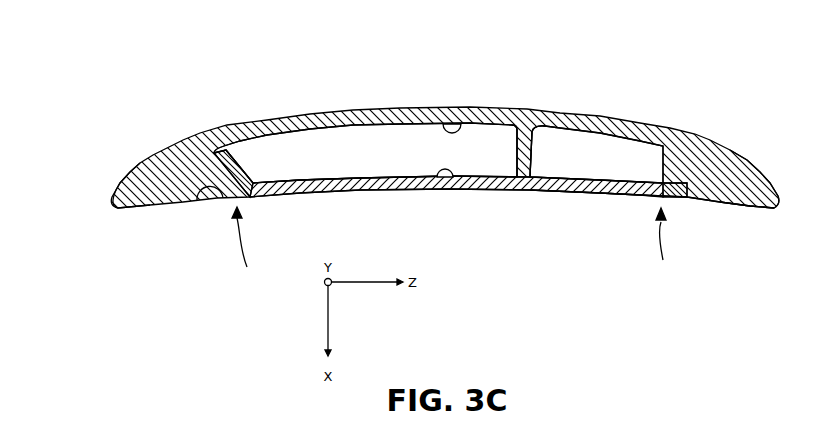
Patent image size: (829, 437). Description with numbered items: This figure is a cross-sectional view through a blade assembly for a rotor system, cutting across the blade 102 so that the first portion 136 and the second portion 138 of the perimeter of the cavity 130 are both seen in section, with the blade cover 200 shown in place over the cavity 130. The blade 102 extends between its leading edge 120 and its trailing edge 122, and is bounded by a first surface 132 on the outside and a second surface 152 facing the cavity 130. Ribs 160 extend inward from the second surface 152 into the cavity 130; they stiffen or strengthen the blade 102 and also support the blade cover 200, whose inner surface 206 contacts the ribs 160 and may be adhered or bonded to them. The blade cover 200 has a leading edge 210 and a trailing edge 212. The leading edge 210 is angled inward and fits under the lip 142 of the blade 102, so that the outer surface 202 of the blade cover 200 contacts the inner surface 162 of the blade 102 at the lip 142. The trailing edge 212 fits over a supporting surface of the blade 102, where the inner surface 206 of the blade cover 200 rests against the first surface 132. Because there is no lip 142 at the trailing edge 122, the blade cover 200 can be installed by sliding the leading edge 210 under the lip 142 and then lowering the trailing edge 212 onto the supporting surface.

The blade 102 is at (177, 150).
The leading edge 120 is at (117, 187).
The trailing edge 122 is at (747, 157).
The cavity 130 is at (292, 143).
The second surface 152 is at (642, 123).
The ribs 160 is at (537, 137).
The inner surface 162 is at (466, 125).
The blade cover 200 is at (314, 196).
The outer surface 202 is at (598, 194).
The inner surface 206 is at (447, 170).
The leading edge 210 is at (232, 190).
The trailing edge 212 is at (654, 198).
The lip 142 is at (198, 192).
The first surface 132 is at (731, 207).
The first portion 136 is at (244, 252).
The second portion 138 is at (668, 247).